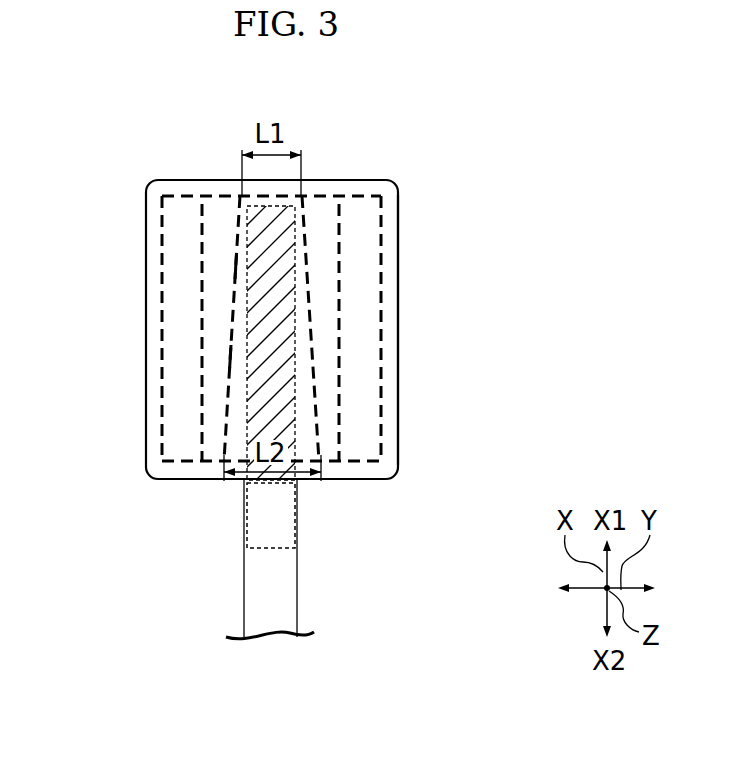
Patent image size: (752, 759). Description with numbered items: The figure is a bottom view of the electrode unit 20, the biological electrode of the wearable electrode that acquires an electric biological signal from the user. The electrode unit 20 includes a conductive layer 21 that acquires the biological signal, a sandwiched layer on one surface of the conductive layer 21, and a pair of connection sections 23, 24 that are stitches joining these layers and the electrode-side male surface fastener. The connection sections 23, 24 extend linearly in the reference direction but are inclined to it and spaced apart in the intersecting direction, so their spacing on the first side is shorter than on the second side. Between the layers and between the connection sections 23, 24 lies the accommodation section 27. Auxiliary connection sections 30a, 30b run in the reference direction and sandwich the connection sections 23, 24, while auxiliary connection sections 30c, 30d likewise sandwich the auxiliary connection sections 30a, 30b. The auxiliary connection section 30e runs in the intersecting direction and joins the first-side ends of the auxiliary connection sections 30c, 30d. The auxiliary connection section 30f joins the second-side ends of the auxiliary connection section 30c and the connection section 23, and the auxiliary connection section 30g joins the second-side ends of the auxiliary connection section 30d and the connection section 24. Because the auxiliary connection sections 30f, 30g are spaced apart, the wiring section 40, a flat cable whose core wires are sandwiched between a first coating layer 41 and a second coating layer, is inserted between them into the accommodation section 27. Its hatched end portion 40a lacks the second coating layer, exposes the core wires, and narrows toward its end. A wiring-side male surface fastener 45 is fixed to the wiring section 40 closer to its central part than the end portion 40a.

The electrode unit 20 is at (406, 198).
The conductive layer 21 is at (388, 229).
The connection section 23 is at (310, 306).
The connection section 24 is at (237, 279).
The accommodation section 27 is at (232, 366).
The auxiliary connection section 30a is at (340, 372).
The auxiliary connection section 30b is at (202, 395).
The auxiliary connection section 30c is at (381, 410).
The auxiliary connection section 30d is at (162, 420).
The auxiliary connection section 30e is at (178, 196).
The auxiliary connection section 30f is at (372, 461).
The auxiliary connection section 30g is at (168, 463).
The wiring section 40 is at (232, 603).
The end portion of the wiring section 40a is at (255, 247).
The first coating layer 41 is at (287, 605).
The wiring-side male surface fastener 45 is at (297, 520).